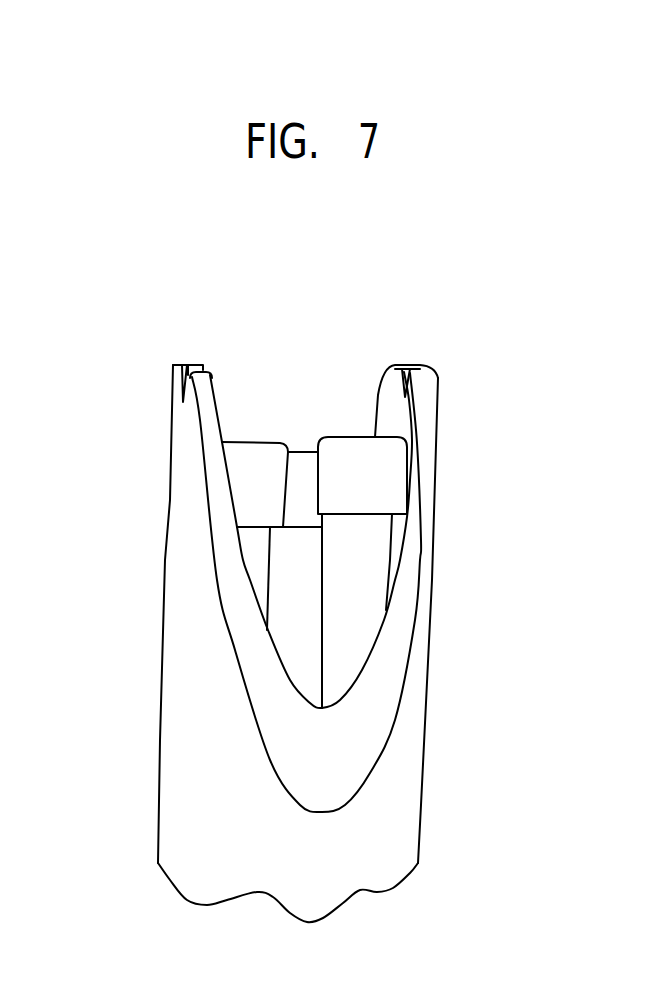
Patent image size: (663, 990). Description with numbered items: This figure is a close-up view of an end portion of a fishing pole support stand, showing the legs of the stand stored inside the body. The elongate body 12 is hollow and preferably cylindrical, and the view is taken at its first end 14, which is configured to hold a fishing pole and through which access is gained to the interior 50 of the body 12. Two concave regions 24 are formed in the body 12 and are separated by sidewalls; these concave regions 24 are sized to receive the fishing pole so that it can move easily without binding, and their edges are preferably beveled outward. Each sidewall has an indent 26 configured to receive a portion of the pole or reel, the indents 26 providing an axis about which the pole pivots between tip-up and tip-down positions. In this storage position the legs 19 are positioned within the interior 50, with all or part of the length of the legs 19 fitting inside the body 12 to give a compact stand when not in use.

The elongate body 12 is at (420, 803).
The first end 14 is at (203, 364).
The legs 19 is at (332, 437).
The concave regions 24 is at (384, 620).
The indent 26 is at (410, 390).
The interior 50 is at (250, 407).